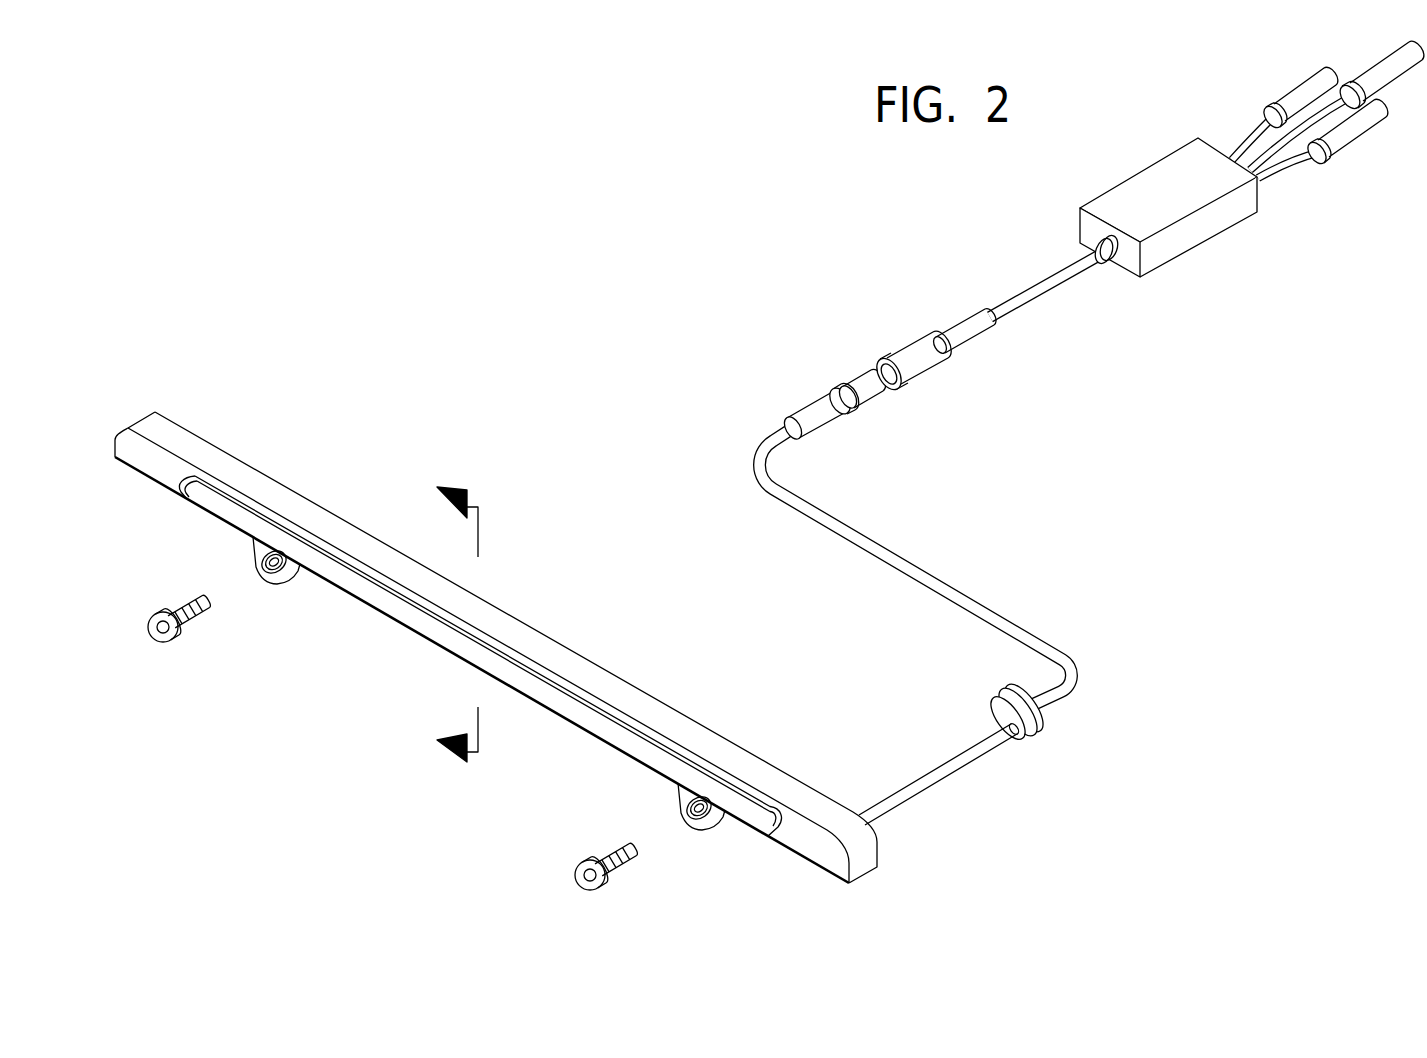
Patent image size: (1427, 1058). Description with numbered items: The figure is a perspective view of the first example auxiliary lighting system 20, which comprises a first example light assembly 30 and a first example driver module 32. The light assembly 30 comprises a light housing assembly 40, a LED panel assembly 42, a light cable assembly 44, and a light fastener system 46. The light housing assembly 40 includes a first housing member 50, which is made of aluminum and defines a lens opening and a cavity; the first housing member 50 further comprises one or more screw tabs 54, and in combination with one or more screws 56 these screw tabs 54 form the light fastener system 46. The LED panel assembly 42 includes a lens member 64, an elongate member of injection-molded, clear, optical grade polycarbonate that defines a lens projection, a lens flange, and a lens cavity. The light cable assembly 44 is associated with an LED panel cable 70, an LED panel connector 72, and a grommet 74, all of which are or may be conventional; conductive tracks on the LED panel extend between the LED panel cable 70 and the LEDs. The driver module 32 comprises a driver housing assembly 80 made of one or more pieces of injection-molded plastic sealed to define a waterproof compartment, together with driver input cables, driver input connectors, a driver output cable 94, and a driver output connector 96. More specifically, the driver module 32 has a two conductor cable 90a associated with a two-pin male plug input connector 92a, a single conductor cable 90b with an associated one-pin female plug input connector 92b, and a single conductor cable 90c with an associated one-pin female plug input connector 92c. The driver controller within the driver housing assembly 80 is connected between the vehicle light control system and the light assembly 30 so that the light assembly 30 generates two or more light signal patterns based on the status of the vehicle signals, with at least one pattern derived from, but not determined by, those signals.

The auxiliary lighting system 20 is at (1143, 576).
The light assembly 30 is at (1075, 792).
The driver module 32 is at (1235, 270).
The light housing assembly 40 is at (518, 613).
The LED panel assembly 42 is at (455, 640).
The light cable assembly 44 is at (1082, 654).
The light fastener system 46 is at (238, 548).
The first housing member 50 is at (537, 648).
The screw tabs 54 is at (273, 588).
The screws 56 is at (192, 614).
The lens member 64 is at (577, 713).
The LED panel cable 70 is at (927, 758).
The LED panel connector 72 is at (870, 393).
The grommet 74 is at (990, 697).
The driver housing assembly 80 is at (1208, 230).
The two conductor cable 90a is at (1250, 138).
The single conductor cable 90b is at (1270, 152).
The single conductor cable 90c is at (1303, 160).
The 2-pin male plug input connector 92a is at (1298, 97).
The 1-pin female plug input connector 92b is at (1378, 83).
The 1-pin female plug input connector 92c is at (1357, 142).
The driver output cable 94 is at (1045, 283).
The driver output connector 96 is at (920, 367).